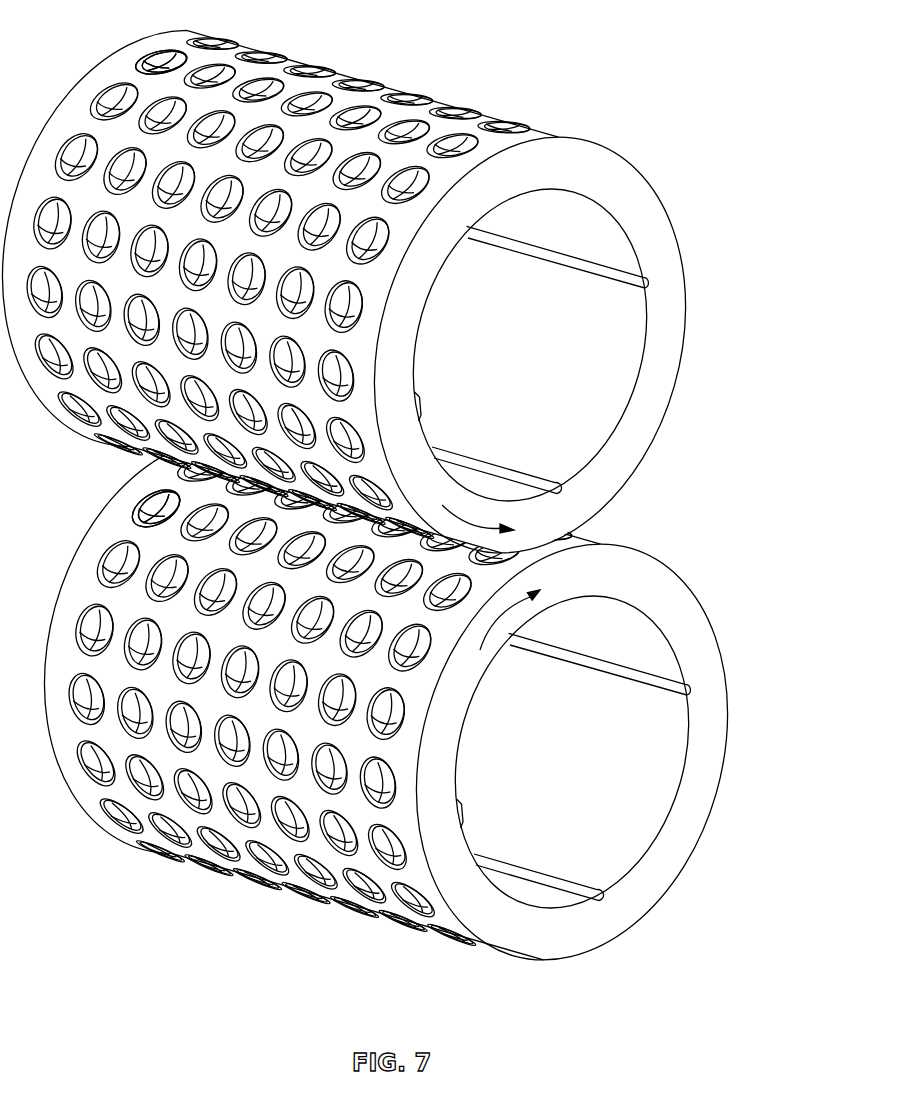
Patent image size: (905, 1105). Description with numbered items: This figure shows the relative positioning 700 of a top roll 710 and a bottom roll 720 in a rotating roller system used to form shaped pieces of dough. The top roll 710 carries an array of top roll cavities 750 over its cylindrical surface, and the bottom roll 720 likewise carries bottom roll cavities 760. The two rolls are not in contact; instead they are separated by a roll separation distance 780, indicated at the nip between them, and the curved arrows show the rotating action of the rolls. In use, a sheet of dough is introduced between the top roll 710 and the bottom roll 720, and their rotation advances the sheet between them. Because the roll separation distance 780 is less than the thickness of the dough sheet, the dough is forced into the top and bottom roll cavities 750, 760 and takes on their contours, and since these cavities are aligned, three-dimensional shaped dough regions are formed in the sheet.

The relative positioning 700 is at (393, 499).
The top roll 710 is at (658, 197).
The bottom roll 720 is at (703, 609).
The top roll cavities 750 is at (160, 53).
The bottom roll cavities 760 is at (110, 557).
The roll separation distance 780 is at (578, 541).